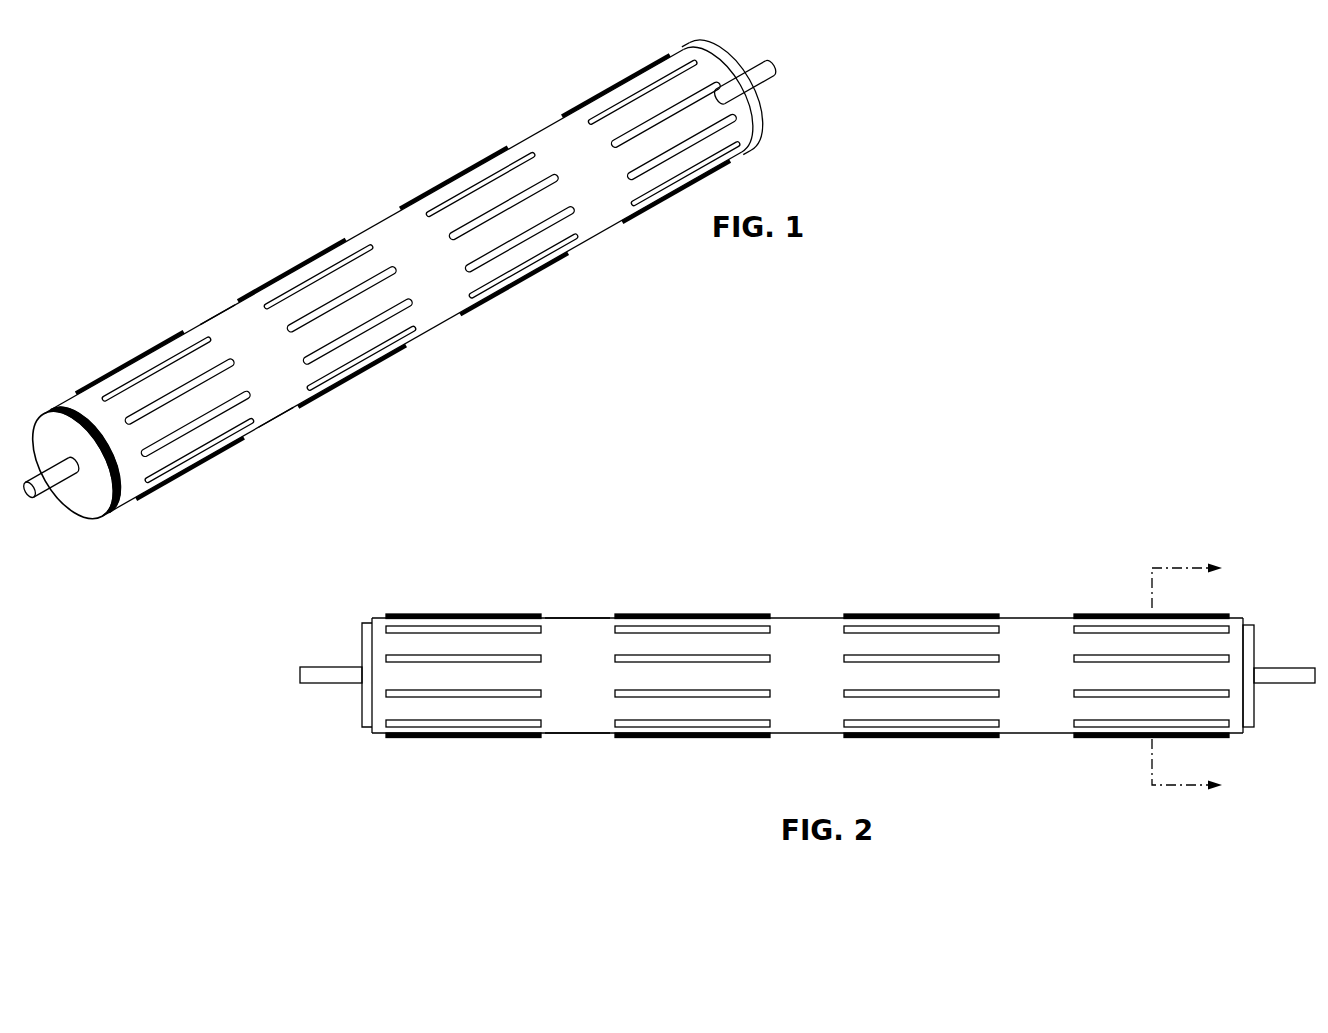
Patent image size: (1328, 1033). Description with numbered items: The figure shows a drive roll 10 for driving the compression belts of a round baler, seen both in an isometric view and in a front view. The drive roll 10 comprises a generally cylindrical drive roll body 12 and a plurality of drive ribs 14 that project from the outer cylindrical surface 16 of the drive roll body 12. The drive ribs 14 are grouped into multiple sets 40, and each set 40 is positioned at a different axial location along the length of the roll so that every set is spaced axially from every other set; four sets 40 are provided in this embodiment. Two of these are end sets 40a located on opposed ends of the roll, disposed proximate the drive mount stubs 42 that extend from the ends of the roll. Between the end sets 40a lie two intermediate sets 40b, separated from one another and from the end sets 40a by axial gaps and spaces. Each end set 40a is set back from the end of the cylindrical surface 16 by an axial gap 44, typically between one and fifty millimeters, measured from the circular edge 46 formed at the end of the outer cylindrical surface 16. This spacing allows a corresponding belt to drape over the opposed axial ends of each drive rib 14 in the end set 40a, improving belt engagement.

In FIG. 1, the drive roll 10 is at (320, 98).
In FIG. 2, the drive roll 10 is at (1110, 491).
In FIG. 1, the drive roll body 12 is at (548, 150).
In FIG. 2, the drive roll body 12 is at (1045, 633).
In FIG. 1, the drive ribs 14 is at (452, 197).
In FIG. 2, the drive ribs 14 is at (705, 623).
In FIG. 1, the outer cylindrical surface 16 is at (223, 327).
In FIG. 2, the outer cylindrical surface 16 is at (575, 625).
In FIG. 2, the sets of drive ribs 40 is at (489, 747).
In FIG. 2, the end sets 40a is at (473, 603).
In FIG. 2, the intermediate sets 40b is at (742, 603).
In FIG. 2, the drive mount stubs 42 is at (362, 627).
In FIG. 1, the axial gap 44 is at (152, 468).
In FIG. 2, the axial gap 44 is at (380, 730).
In FIG. 1, the circular edge 46 is at (122, 497).
In FIG. 2, the circular edge 46 is at (362, 730).